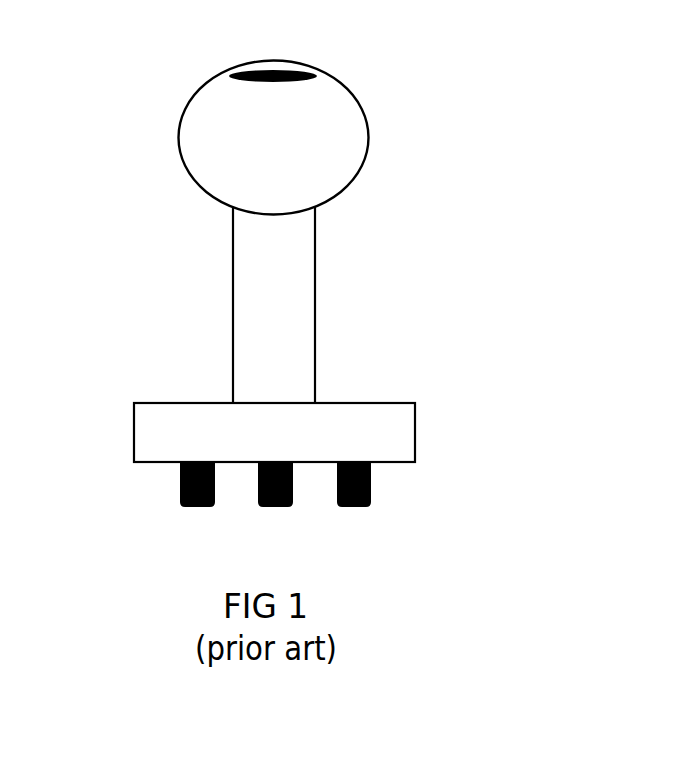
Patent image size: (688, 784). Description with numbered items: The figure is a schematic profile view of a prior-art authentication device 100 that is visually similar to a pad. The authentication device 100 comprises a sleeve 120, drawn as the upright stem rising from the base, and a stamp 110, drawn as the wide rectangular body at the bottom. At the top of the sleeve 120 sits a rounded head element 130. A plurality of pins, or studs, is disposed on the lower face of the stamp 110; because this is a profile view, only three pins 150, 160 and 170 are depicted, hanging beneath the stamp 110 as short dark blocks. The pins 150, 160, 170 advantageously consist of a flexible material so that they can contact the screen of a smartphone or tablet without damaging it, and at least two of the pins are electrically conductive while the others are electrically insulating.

The authentication device 100 is at (420, 162).
The stamp 110 is at (134, 440).
The sleeve 120 is at (243, 230).
The bulb head 130 is at (224, 72).
The pin 150 is at (180, 502).
The pin 160 is at (262, 505).
The pin 170 is at (344, 505).